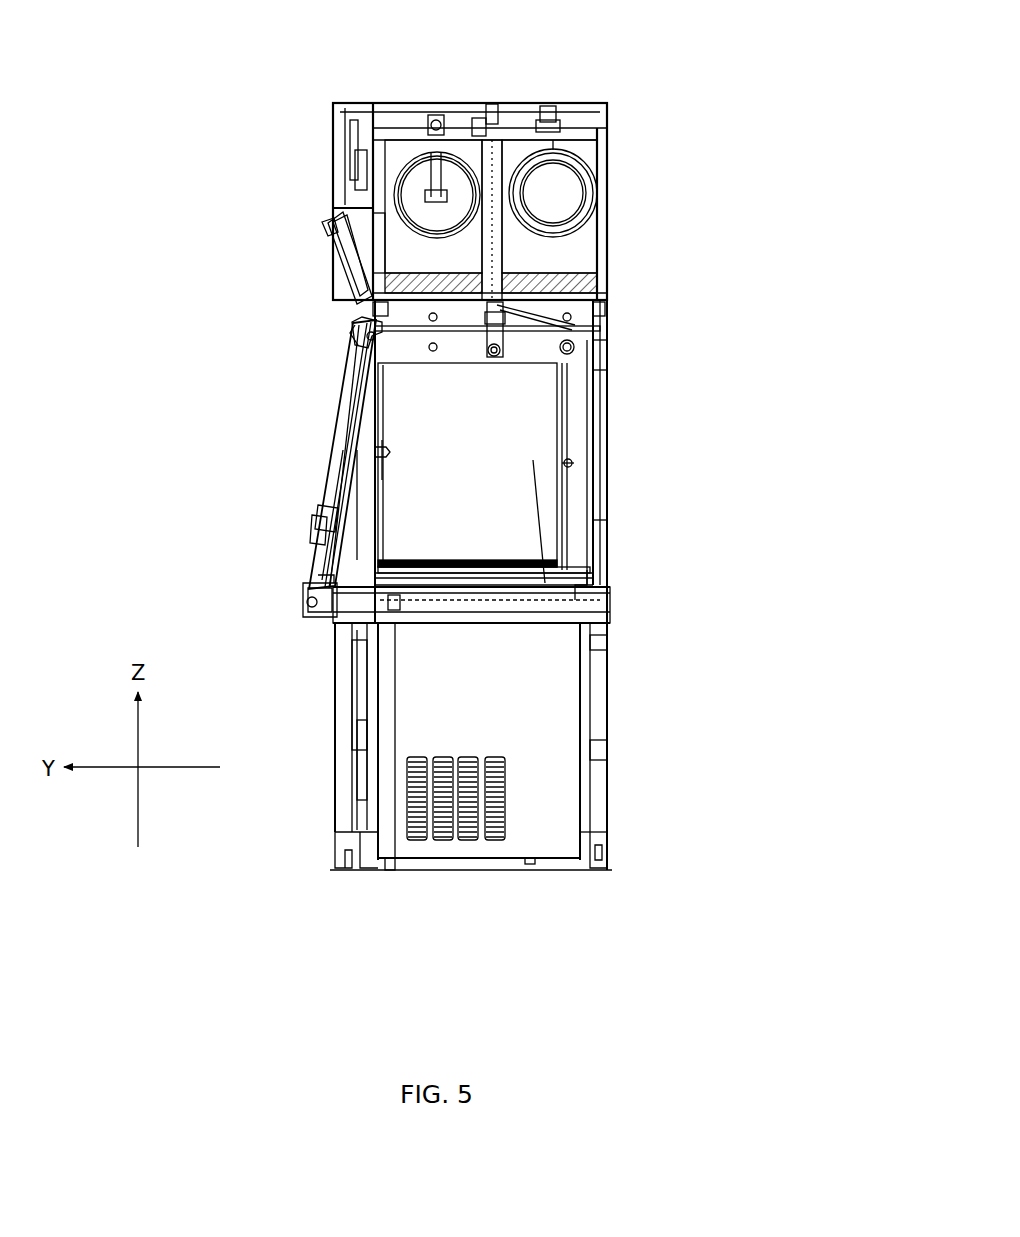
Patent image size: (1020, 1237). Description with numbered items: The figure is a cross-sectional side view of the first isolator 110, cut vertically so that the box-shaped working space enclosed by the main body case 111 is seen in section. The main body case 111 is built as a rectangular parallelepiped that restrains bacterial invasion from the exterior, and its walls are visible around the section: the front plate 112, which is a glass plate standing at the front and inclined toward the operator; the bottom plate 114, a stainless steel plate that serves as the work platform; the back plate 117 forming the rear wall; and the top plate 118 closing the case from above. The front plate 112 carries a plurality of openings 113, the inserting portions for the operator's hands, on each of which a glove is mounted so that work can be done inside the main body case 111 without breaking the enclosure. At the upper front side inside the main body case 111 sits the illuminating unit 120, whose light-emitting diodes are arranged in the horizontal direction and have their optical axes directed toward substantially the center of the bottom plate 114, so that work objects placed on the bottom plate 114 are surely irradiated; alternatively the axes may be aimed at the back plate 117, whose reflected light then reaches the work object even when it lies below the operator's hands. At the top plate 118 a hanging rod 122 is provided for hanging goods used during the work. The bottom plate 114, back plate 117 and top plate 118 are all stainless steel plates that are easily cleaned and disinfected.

The first isolator 110 is at (616, 93).
The main body case 111 is at (402, 398).
The front plate 112 is at (337, 413).
The openings 113 is at (320, 522).
The bottom plate 114 is at (440, 580).
The back plate 117 is at (572, 463).
The top plate 118 is at (572, 346).
The illuminating unit 120 is at (357, 327).
The hanging rod 122 is at (500, 352).